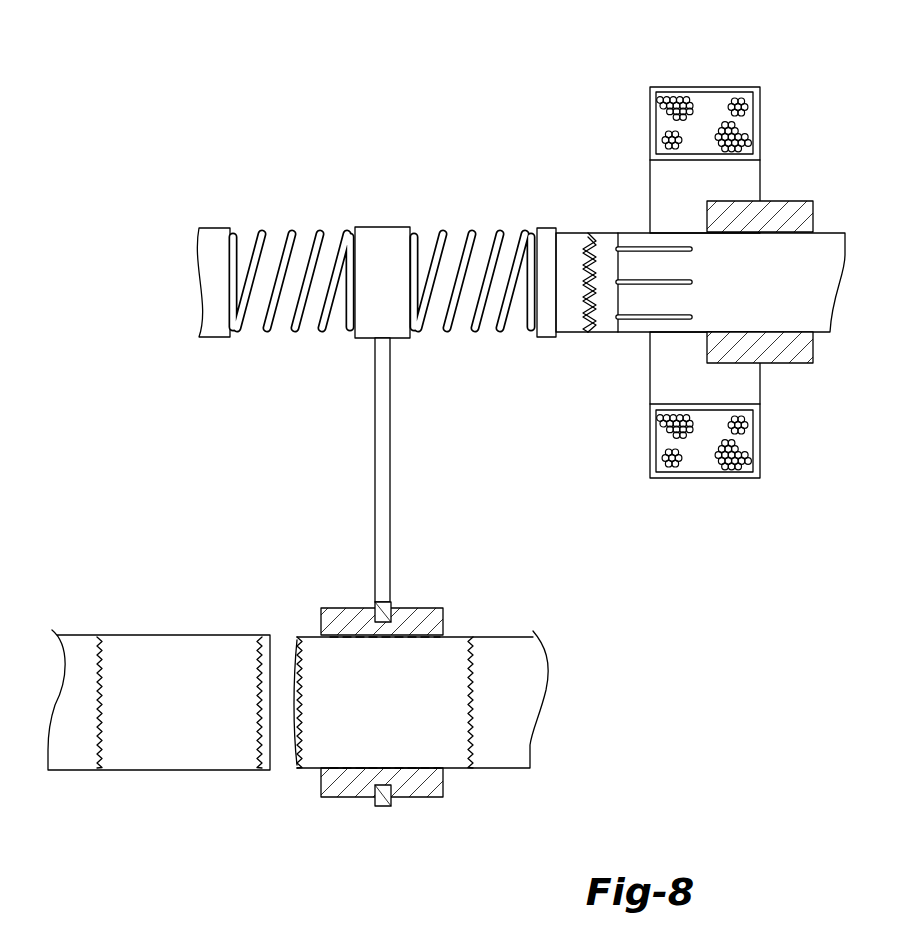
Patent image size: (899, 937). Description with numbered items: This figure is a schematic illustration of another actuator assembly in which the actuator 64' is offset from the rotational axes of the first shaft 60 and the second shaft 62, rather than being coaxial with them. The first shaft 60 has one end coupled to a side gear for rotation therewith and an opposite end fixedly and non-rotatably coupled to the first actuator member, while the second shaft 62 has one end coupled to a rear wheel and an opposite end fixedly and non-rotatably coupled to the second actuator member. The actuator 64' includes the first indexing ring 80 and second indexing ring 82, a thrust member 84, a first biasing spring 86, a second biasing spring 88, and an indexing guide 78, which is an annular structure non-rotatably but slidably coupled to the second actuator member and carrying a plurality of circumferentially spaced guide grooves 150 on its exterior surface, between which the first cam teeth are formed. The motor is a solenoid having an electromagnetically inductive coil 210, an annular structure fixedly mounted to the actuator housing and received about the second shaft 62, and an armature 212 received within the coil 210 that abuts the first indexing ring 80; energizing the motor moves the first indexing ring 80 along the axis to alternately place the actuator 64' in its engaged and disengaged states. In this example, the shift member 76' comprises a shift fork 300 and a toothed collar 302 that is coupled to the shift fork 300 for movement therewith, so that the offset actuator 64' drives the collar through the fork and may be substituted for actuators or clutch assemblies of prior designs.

The actuator 64' is at (377, 218).
The second biasing spring 88 is at (266, 327).
The first biasing spring 86 is at (448, 327).
The thrust member 84 is at (545, 325).
The second indexing ring 82 is at (566, 325).
The first indexing ring 80 is at (607, 245).
The indexing guide 78 is at (813, 318).
The guide grooves 150 is at (684, 282).
The electromagnetically inductive coil 210 is at (731, 92).
The armature 212 is at (795, 200).
The shift member 76' is at (324, 614).
The shift fork 300 is at (377, 525).
The toothed collar 302 is at (425, 607).
The first shaft 60 is at (152, 650).
The second shaft 62 is at (507, 640).